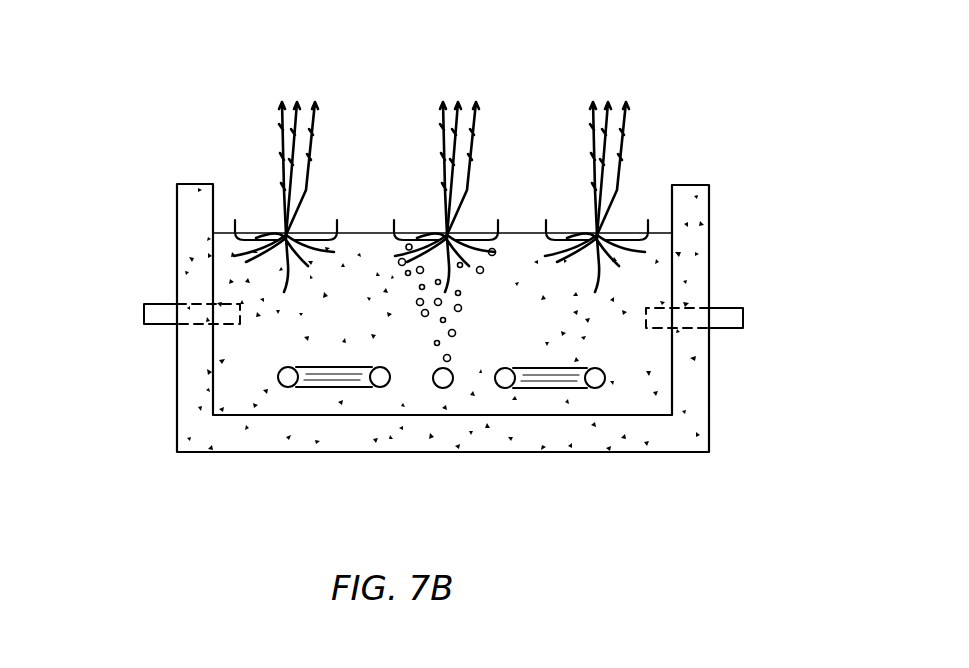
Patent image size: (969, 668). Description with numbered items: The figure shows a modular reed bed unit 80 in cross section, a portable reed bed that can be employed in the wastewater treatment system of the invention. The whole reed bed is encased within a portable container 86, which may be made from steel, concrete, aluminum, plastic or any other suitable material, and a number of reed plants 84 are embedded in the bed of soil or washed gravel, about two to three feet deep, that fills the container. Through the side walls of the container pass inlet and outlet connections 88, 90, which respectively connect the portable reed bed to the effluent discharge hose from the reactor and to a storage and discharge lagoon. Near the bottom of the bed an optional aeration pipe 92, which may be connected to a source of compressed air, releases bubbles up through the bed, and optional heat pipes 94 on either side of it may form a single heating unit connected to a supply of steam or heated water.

The modular reed bed unit 80 is at (158, 403).
The reed plants 84 is at (627, 130).
The portable container 86 is at (693, 253).
The inlet connection 88 is at (727, 319).
The outlet connection 90 is at (152, 303).
The aeration pipe 92 is at (433, 386).
The heat pipes 94 is at (333, 383).